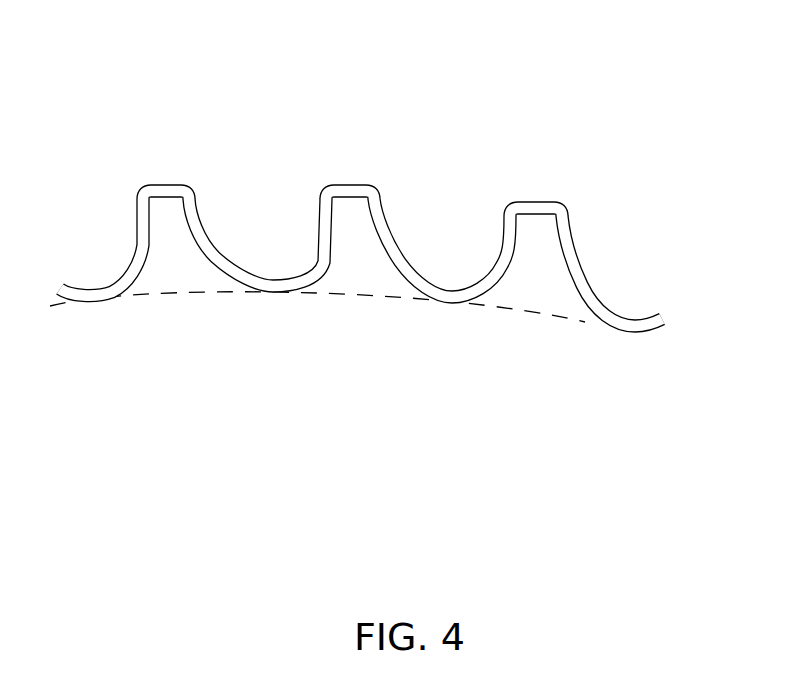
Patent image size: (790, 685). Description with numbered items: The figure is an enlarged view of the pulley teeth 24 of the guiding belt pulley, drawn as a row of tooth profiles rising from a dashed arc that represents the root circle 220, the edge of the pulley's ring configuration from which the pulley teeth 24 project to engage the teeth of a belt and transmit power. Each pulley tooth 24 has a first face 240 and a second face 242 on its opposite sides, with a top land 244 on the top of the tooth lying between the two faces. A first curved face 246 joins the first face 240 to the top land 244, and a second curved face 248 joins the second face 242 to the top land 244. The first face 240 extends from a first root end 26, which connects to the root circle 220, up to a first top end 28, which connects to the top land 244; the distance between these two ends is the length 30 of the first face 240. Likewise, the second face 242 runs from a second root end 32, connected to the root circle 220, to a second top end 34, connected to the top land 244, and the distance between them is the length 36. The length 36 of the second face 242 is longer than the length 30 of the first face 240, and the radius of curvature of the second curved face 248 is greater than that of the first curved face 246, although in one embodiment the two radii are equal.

The pulley teeth 24 is at (573, 228).
The first root end 26 is at (271, 299).
The first top end 28 is at (320, 256).
The length 30 is at (320, 259).
The second root end 32 is at (452, 303).
The second top end 34 is at (384, 204).
The length 36 is at (403, 254).
The root circle 220 is at (132, 298).
The first face 240 is at (319, 211).
The second face 242 is at (405, 274).
The top land 244 is at (350, 186).
The first curved face 246 is at (322, 185).
The second curved face 248 is at (377, 188).